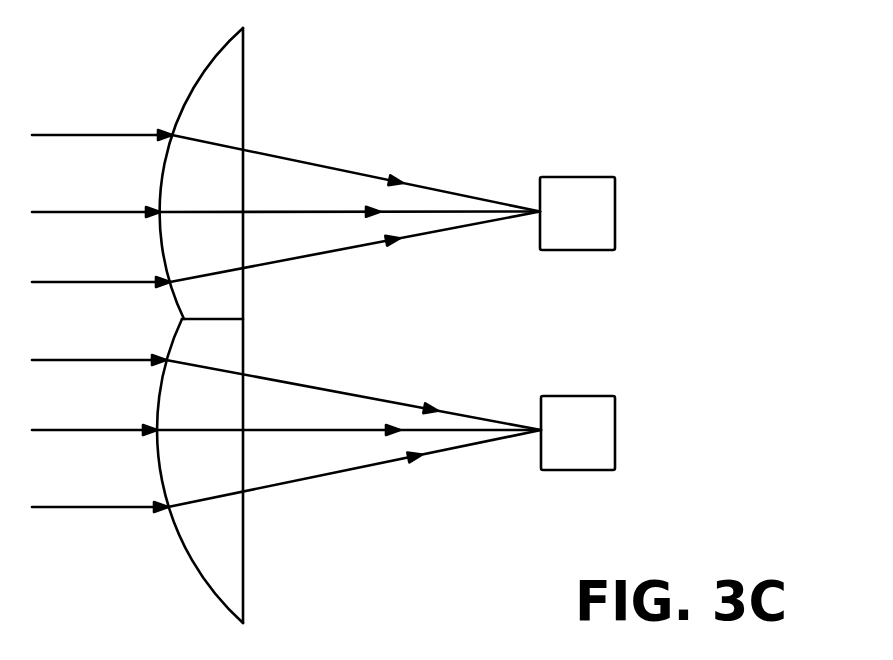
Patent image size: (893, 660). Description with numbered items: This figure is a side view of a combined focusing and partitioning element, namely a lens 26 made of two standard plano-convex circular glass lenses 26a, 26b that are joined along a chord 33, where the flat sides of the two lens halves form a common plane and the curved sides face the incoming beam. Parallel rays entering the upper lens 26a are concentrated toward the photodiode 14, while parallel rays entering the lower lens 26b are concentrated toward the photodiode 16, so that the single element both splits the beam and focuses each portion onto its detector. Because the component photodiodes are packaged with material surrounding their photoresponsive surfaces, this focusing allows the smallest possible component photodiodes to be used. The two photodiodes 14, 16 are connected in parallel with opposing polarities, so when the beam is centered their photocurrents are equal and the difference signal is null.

The lens 26 is at (223, 325).
The plano-convex circular glass lens 26a is at (185, 105).
The plano-convex circular glass lens 26b is at (188, 558).
The chord 33 is at (228, 318).
The photodiode 14 is at (596, 232).
The photodiode 16 is at (596, 451).